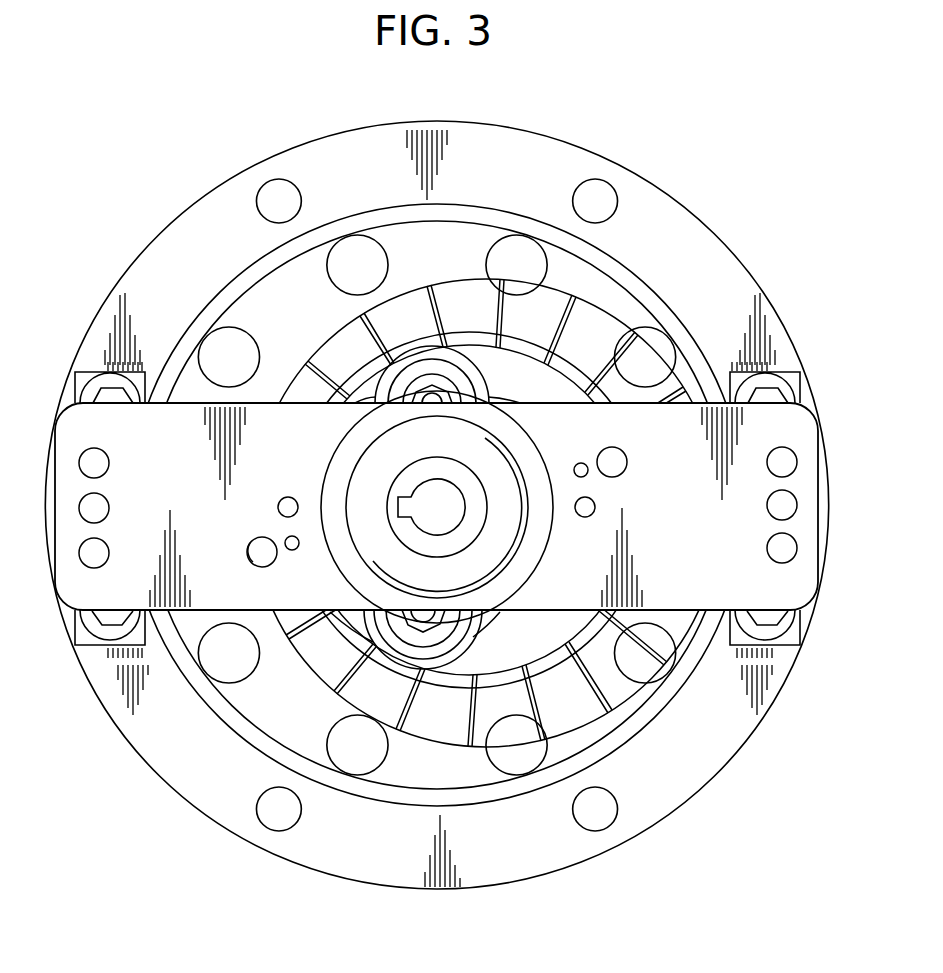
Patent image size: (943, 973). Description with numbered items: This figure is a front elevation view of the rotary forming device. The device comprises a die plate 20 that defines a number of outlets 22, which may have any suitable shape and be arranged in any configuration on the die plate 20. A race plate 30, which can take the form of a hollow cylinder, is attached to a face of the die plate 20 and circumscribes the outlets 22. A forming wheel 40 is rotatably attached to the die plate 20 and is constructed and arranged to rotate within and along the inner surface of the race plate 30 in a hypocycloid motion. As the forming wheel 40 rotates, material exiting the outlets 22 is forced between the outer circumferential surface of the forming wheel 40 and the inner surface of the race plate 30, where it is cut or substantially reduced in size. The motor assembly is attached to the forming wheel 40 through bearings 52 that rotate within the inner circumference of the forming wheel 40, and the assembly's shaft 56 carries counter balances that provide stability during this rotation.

The die plate 20 is at (541, 160).
The outlets 22 is at (237, 352).
The race plate 30 is at (613, 275).
The forming wheel 40 is at (600, 325).
The bearings 52 is at (467, 367).
The shaft 56 is at (452, 510).